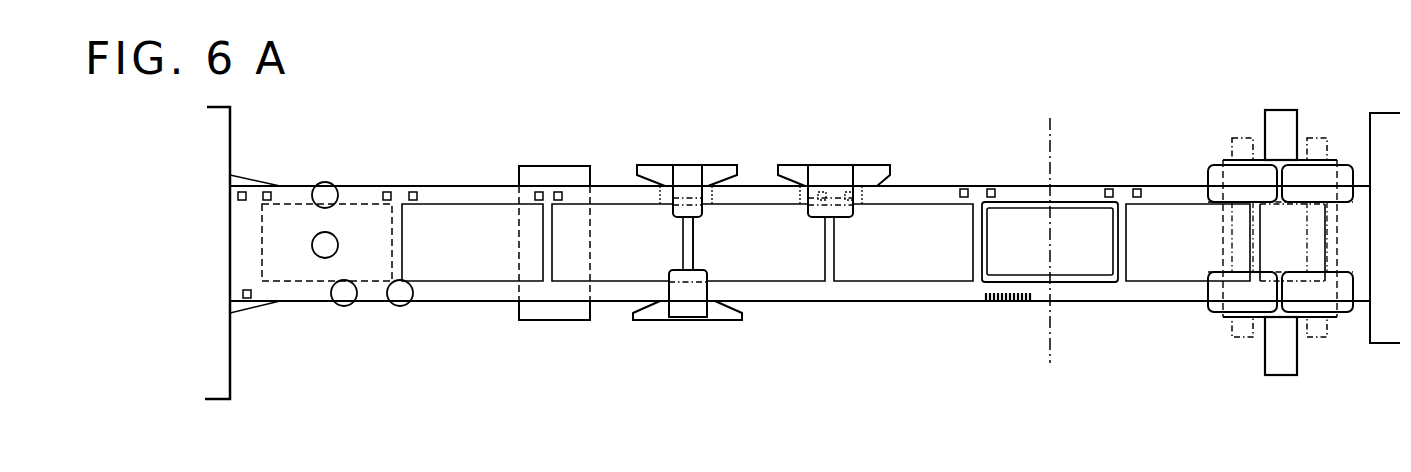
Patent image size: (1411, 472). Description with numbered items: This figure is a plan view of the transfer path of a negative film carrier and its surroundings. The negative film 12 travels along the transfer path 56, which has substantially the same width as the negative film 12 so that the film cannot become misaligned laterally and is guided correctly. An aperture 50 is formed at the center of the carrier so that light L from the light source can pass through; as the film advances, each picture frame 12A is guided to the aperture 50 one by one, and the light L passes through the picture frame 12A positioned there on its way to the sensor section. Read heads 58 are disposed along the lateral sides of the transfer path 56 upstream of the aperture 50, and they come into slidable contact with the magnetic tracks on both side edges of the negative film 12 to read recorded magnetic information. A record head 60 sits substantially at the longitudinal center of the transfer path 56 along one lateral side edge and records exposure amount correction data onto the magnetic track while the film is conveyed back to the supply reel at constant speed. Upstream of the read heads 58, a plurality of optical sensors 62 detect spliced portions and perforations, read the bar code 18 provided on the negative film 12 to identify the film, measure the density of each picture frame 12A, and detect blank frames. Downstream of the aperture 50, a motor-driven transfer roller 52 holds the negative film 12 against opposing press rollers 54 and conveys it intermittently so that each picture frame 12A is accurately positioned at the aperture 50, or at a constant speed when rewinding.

The negative film 12 is at (780, 302).
The picture frame 12A is at (885, 282).
The bar code 18 is at (985, 302).
The aperture 50 is at (1093, 283).
The transfer roller 52 is at (1278, 322).
The press rollers 54 is at (1206, 318).
The transfer path 56 is at (1185, 186).
The read heads 58 is at (685, 165).
The record head 60 is at (830, 175).
The optical sensors 62 is at (330, 183).
The light L is at (1063, 114).